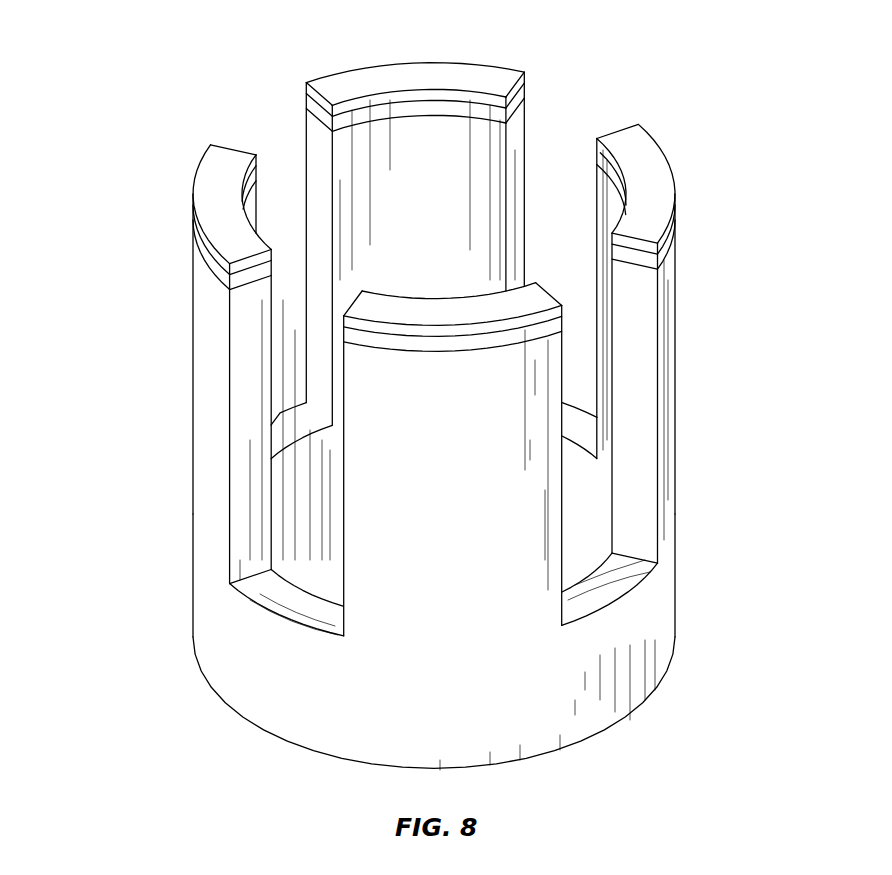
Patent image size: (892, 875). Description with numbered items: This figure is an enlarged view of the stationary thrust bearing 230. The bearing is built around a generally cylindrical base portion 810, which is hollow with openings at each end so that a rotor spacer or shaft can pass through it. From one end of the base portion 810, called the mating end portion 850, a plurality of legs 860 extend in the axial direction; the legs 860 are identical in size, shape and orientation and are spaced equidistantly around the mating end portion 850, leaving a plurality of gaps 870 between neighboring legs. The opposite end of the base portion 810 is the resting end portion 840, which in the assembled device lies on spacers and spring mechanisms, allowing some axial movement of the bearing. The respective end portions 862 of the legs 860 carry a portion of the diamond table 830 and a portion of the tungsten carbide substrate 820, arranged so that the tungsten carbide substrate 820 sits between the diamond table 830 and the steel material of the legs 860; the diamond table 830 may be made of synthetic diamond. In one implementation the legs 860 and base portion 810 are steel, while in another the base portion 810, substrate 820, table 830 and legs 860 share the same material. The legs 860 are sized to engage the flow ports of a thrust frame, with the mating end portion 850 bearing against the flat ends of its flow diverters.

The stationary thrust bearing 230 is at (165, 70).
The base portion 810 is at (668, 613).
The tungsten carbide substrate 820 is at (667, 239).
The diamond table 830 is at (440, 63).
The resting end portion 840 is at (615, 726).
The mating end portion 850 is at (252, 596).
The legs 860 is at (668, 421).
The end portions 862 is at (210, 146).
The gaps 870 is at (570, 110).